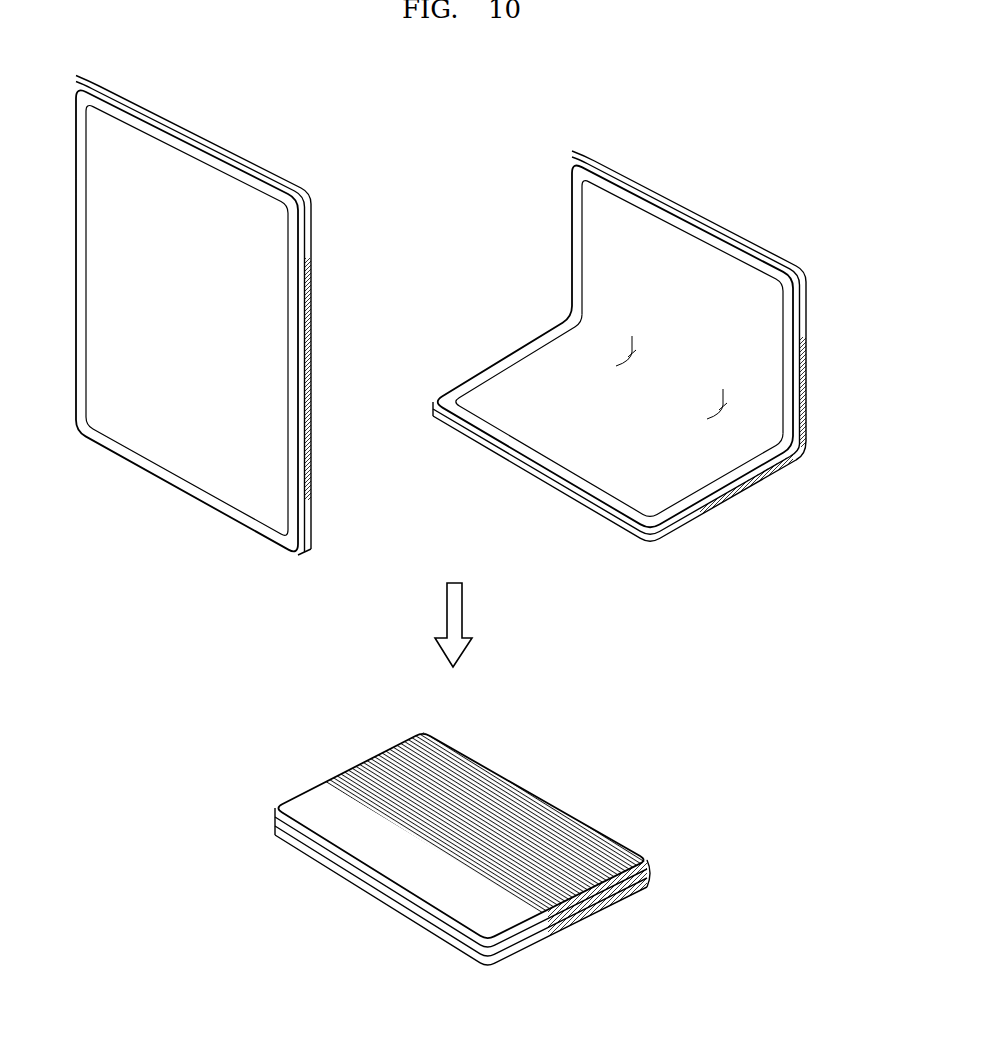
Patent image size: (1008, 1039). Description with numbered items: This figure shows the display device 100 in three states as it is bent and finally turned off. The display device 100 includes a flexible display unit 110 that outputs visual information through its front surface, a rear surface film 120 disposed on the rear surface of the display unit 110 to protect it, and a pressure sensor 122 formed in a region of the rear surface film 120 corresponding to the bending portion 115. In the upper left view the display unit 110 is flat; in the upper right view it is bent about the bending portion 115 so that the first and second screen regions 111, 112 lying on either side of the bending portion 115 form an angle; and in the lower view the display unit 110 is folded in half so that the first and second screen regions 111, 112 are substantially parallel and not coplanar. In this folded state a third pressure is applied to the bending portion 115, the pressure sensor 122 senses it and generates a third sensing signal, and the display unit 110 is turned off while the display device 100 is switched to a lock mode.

The display device 100 is at (268, 127).
The display unit 110 is at (188, 463).
The first screen region 111 is at (567, 352).
The second screen region 112 is at (597, 283).
The bending portion 115 is at (800, 446).
The rear surface film 120 is at (311, 231).
The pressure sensor 122 is at (307, 308).